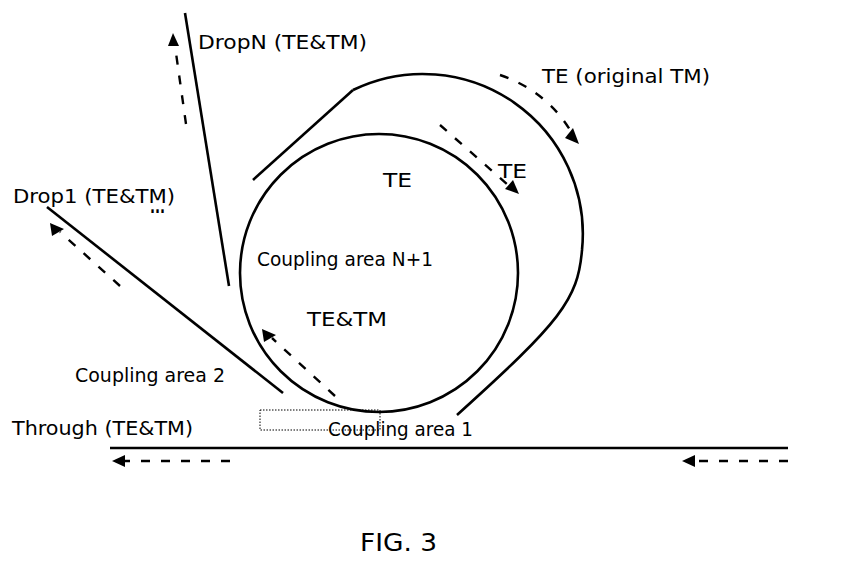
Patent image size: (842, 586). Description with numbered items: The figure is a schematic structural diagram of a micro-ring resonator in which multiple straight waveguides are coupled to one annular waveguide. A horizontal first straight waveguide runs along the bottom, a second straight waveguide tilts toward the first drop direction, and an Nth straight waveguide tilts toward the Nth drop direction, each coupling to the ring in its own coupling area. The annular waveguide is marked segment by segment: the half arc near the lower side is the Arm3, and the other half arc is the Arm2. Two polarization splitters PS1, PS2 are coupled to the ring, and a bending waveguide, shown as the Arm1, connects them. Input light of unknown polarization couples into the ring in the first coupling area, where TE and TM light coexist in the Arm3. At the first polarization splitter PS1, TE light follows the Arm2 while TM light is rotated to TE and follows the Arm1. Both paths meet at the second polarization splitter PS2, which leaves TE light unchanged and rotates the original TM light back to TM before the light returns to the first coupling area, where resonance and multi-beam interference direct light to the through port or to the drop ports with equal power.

The first polarization splitter PS1 is at (303, 125).
The second polarization splitter PS2 is at (519, 332).
The bending waveguide Arm1 is at (497, 162).
The annular waveguide half arc Arm2 is at (379, 273).
The annular waveguide lower half arc Arm3 is at (320, 423).